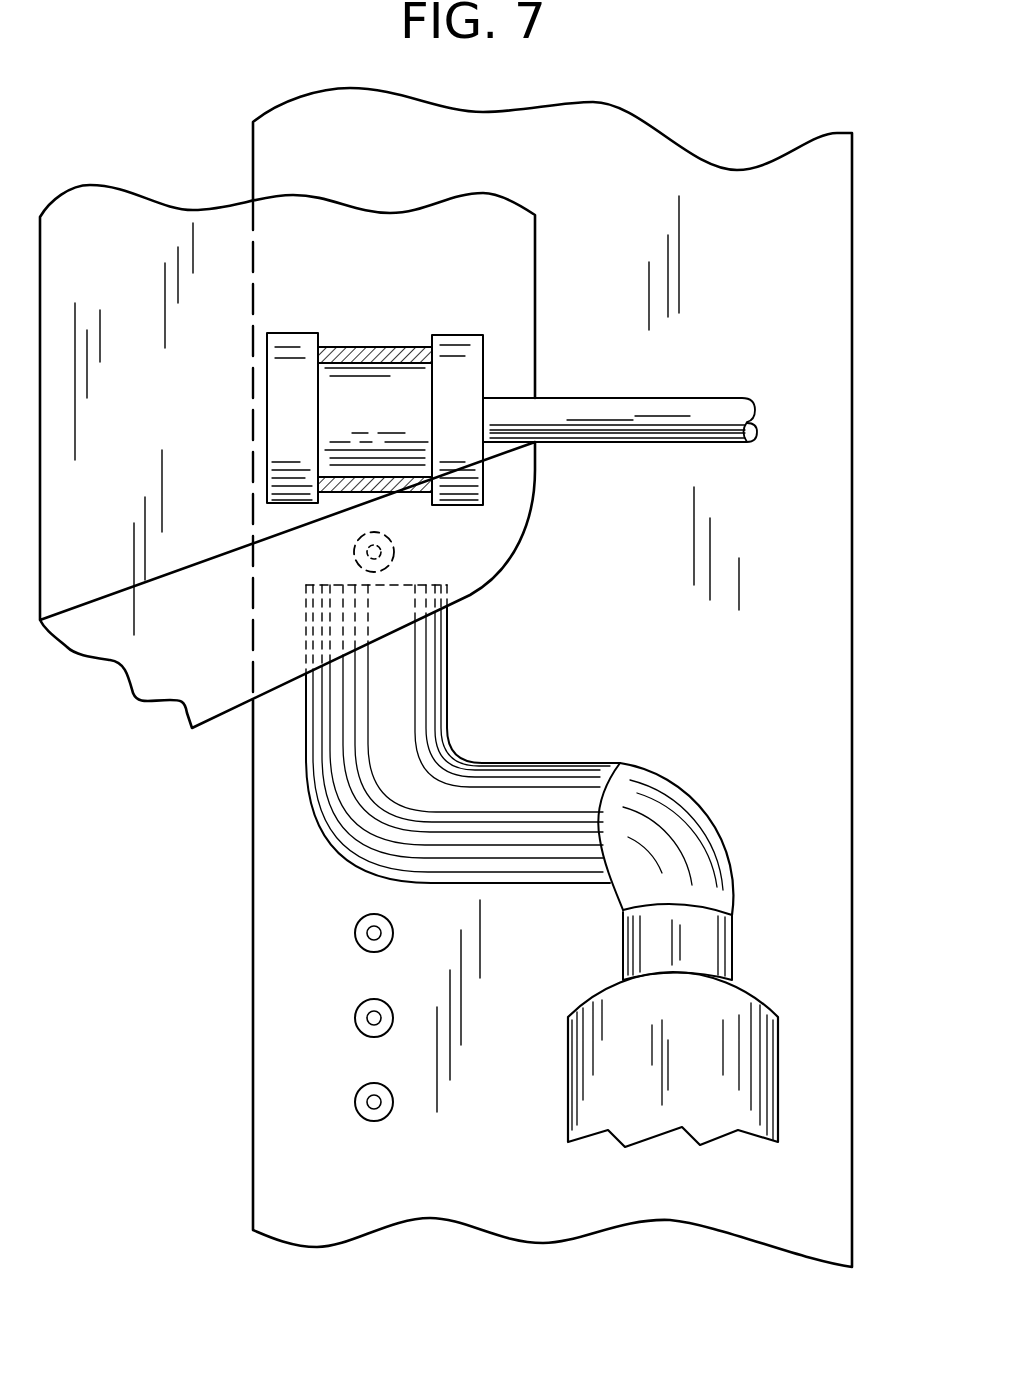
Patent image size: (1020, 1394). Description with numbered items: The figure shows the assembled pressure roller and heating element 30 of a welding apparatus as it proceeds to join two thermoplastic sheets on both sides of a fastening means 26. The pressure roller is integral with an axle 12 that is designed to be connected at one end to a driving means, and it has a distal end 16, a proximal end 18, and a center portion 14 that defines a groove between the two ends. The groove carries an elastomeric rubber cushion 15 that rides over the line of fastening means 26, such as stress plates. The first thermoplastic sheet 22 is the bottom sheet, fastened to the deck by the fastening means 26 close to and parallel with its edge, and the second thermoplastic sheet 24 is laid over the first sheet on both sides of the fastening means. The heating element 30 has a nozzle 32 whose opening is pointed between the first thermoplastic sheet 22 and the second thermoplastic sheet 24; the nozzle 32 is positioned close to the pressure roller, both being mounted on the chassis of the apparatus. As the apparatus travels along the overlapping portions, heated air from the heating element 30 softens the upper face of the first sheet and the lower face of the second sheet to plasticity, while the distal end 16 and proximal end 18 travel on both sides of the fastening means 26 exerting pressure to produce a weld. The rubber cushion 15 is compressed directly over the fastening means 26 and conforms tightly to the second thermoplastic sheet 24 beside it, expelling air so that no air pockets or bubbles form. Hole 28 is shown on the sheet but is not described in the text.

The axle 12 is at (633, 397).
The center portion 14 is at (413, 397).
The rubber cushion 15 is at (360, 347).
The distal end 16 is at (293, 352).
The proximal end 18 is at (457, 340).
The first thermoplastic sheet 22 is at (852, 1035).
The second thermoplastic sheet 24 is at (213, 703).
The fastening means 26 is at (372, 1102).
The hole 28 is at (372, 1018).
The heating element 30 is at (770, 1083).
The nozzle 32 is at (437, 650).